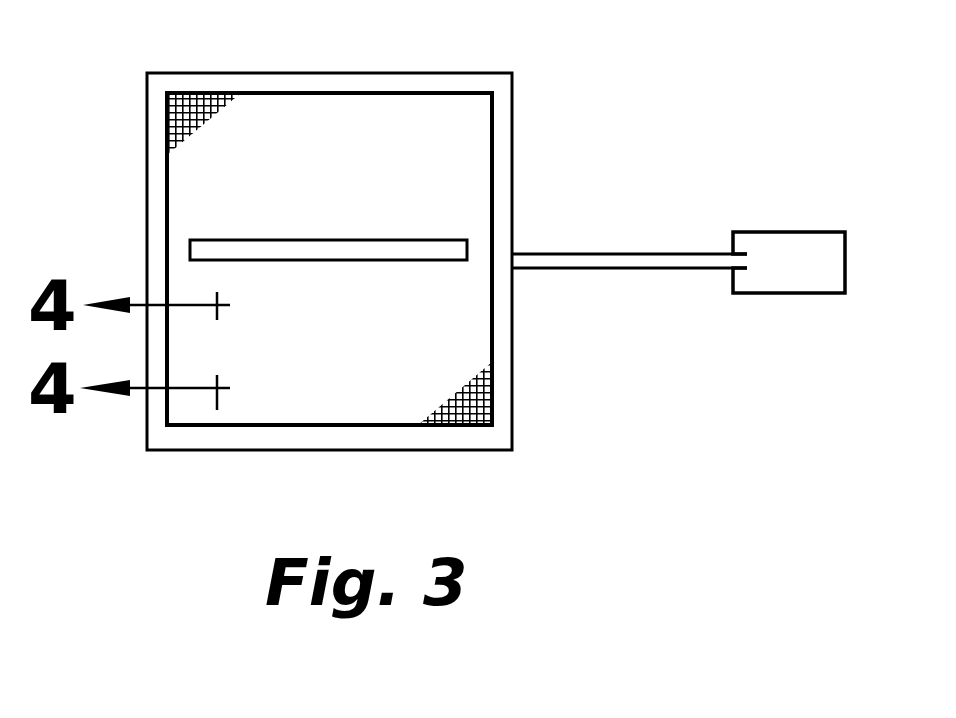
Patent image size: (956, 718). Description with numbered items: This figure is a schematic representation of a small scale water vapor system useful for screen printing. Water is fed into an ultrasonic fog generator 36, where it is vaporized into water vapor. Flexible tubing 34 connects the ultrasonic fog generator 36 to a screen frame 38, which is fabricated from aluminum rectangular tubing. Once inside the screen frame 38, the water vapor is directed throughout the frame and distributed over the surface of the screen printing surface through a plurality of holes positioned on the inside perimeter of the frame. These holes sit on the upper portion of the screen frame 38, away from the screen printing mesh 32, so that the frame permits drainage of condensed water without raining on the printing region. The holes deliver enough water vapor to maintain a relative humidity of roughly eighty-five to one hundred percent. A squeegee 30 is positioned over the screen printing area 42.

The squeegee 30 is at (343, 245).
The screen printing mesh 32 is at (473, 412).
The flexible tubing 34 is at (663, 254).
The ultrasonic fog generator 36 is at (791, 240).
The screen frame 38 is at (504, 386).
The screen printing area 42 is at (244, 120).